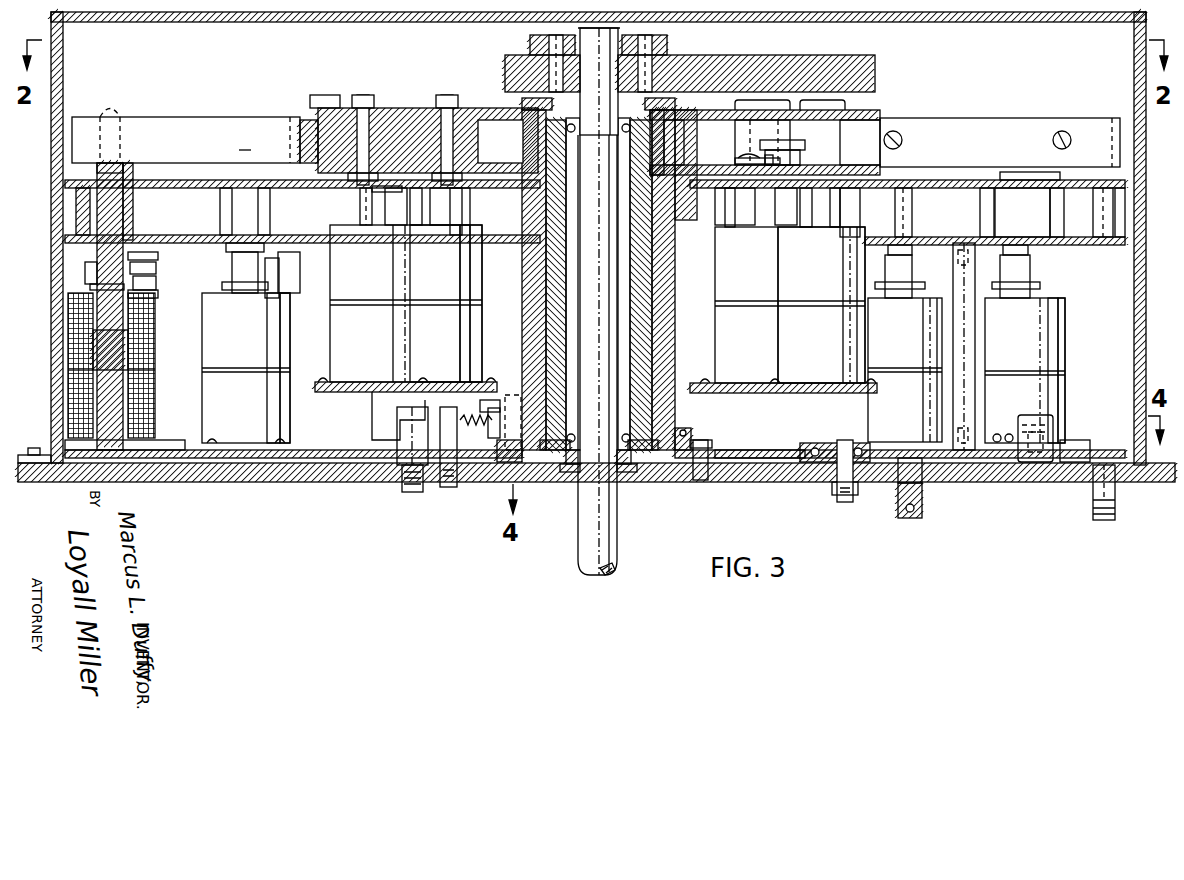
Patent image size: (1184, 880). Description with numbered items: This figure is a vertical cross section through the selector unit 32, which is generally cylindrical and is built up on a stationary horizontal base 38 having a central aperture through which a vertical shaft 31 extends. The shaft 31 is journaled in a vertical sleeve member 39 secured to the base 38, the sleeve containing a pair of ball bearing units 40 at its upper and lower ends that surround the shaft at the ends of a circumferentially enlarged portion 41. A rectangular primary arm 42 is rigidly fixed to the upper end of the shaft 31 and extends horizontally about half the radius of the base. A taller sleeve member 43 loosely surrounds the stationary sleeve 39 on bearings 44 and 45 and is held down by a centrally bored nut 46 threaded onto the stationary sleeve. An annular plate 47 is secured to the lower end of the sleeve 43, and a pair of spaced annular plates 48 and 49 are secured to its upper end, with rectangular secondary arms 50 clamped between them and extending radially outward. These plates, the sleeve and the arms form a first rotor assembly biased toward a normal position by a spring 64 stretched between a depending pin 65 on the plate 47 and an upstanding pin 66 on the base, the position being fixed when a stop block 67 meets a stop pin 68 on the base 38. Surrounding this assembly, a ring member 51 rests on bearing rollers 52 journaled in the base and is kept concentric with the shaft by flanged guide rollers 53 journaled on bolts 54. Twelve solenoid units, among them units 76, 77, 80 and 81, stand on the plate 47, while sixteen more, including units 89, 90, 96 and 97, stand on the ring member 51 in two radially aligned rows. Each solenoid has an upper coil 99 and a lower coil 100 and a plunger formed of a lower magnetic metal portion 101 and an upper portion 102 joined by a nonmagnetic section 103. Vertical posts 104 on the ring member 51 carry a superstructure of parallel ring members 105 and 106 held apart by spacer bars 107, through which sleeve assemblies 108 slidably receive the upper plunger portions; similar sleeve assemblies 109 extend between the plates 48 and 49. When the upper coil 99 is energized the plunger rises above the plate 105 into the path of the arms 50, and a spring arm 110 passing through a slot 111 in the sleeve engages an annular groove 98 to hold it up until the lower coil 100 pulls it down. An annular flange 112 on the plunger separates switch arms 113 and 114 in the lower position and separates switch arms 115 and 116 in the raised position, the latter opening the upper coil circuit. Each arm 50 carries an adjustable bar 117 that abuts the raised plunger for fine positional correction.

The vertical shaft 31 is at (618, 515).
The selector unit 32 is at (296, 498).
The stationary horizontal base 38 is at (750, 486).
The vertical sleeve member 39 is at (632, 403).
The ball bearing units 40 is at (632, 118).
The circumferentially enlarged portion 41 is at (596, 458).
The primary arm 42 is at (778, 58).
The sleeve member 43 is at (678, 270).
The bearing 44 is at (688, 444).
The bearing 45 is at (668, 180).
The nut 46 is at (525, 112).
The annular plate 47 is at (766, 394).
The annular plate 48 is at (870, 114).
The annular plate 49 is at (893, 166).
The secondary arms 50 is at (245, 141).
The ring member 51 is at (1108, 452).
The bearing rollers 52 is at (915, 518).
The flanged guide rollers 53 is at (815, 443).
The bolts 54 is at (845, 502).
The spring 64 is at (452, 414).
The depending pin 65 is at (509, 395).
The upstanding pin 66 is at (450, 475).
The stop block 67 is at (372, 422).
The stop pin 68 is at (402, 475).
The solenoid unit 76 is at (374, 343).
The solenoid unit 77 is at (438, 343).
The solenoid unit 80 is at (750, 339).
The solenoid unit 81 is at (810, 339).
The solenoid unit 89 is at (242, 354).
The solenoid unit 90 is at (158, 378).
The solenoid unit 96 is at (899, 349).
The solenoid unit 97 is at (1024, 352).
The annular groove 98 is at (88, 270).
The upper coil 99 is at (150, 345).
The lower coil 100 is at (150, 410).
The lower magnetic metal portion 101 is at (112, 440).
The upper portion 102 is at (110, 165).
The intermediate nonmagnetic section 103 is at (100, 315).
The vertical posts 104 is at (976, 316).
The ring member 105 is at (1058, 178).
The ring member 106 is at (1080, 245).
The spacer bars 107 is at (895, 214).
The sleeve assemblies 108 is at (130, 172).
The sleeve assemblies 109 is at (794, 145).
The spring arm 110 is at (760, 150).
The slot 111 is at (770, 155).
The annular flange 112 is at (90, 286).
The switch arm 113 is at (158, 292).
The switch arm 114 is at (156, 284).
The switch arm 115 is at (158, 256).
The switch arm 116 is at (156, 269).
The adjustable bar 117 is at (224, 117).